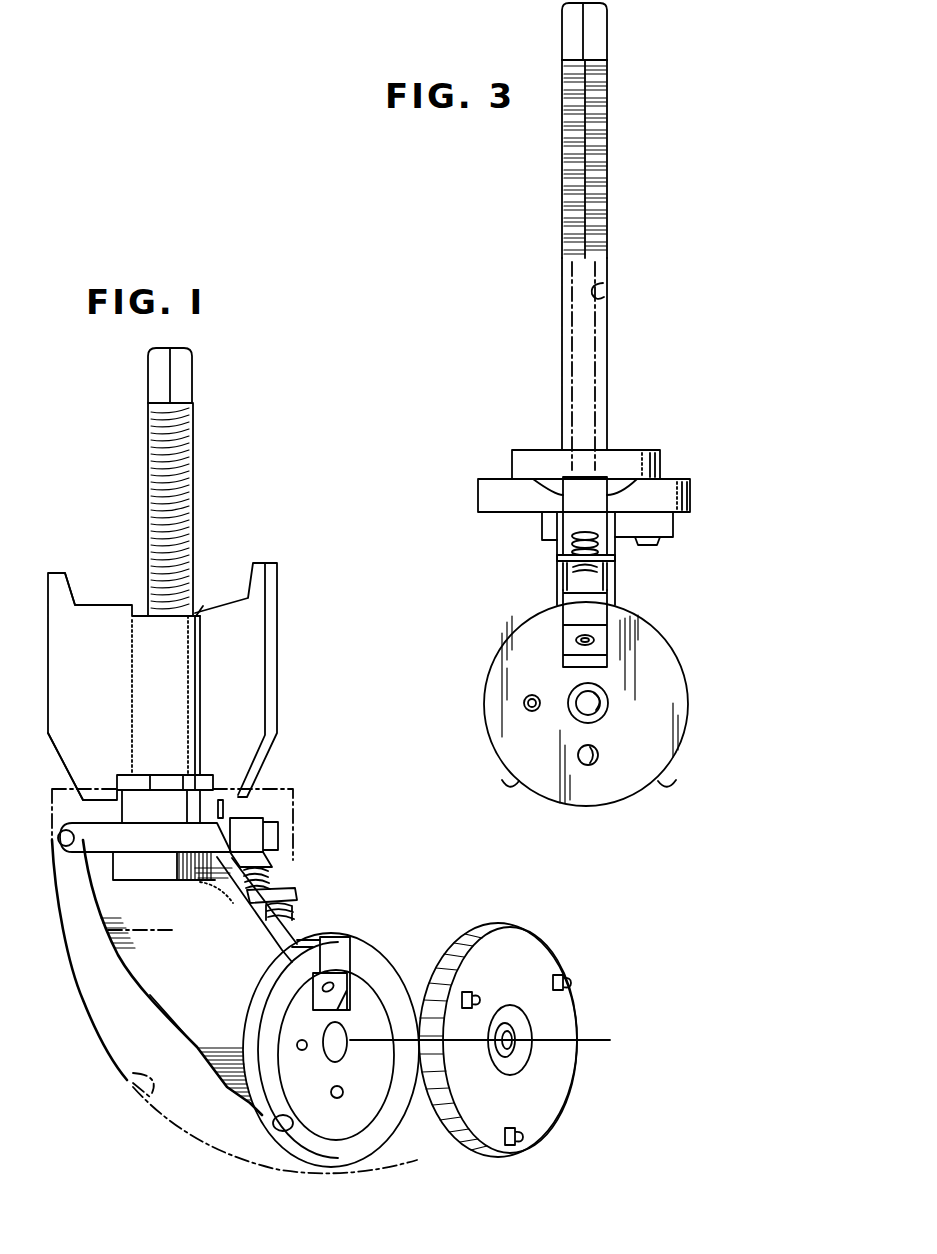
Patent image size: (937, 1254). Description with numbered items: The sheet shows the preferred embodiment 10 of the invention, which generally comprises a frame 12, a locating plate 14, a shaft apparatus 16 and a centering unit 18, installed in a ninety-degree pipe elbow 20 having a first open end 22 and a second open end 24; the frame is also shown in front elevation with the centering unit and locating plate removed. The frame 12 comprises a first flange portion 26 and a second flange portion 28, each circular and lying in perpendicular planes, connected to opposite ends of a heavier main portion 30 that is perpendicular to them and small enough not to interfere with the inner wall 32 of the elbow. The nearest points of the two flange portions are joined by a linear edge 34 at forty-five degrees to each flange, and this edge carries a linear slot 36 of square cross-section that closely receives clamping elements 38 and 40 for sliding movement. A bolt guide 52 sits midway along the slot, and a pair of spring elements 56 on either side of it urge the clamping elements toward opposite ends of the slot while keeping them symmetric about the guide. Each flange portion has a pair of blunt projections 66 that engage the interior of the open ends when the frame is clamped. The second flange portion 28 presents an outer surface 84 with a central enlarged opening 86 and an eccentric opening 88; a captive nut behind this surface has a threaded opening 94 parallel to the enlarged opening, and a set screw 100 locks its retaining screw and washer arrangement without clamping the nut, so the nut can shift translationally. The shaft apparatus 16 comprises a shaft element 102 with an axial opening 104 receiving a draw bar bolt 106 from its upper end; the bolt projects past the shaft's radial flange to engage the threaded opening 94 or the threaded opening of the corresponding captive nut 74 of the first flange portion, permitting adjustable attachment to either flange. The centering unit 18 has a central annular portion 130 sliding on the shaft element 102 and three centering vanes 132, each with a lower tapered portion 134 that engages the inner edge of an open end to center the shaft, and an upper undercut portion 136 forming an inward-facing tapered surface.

In FIG. 1, the embodiment 10 is at (322, 545).
In FIG. 1, the frame 12 is at (108, 958).
In FIG. 1, the locating plate 14 is at (531, 932).
In FIG. 1, the shaft apparatus 16 is at (146, 520).
In FIG. 3, the shaft apparatus 16 is at (612, 244).
In FIG. 1, the centering unit 18 is at (265, 666).
In FIG. 1, the pipe elbow 20 is at (300, 858).
In FIG. 1, the first open end 22 is at (260, 792).
In FIG. 1, the second open end 24 is at (417, 1160).
In FIG. 1, the first flange portion 26 is at (86, 850).
In FIG. 1, the second flange portion 28 is at (330, 1127).
In FIG. 1, the main portion 30 is at (162, 1012).
In FIG. 1, the inner wall 32 is at (142, 1095).
In FIG. 1, the edge 34 is at (207, 873).
In FIG. 1, the linear slot 36 is at (300, 896).
In FIG. 1, the clamping element 38 is at (245, 826).
In FIG. 1, the clamping element 40 is at (345, 946).
In FIG. 1, the bolt guide 52 is at (276, 886).
In FIG. 3, the bolt guide 52 is at (598, 560).
In FIG. 1, the spring elements 56 is at (275, 880).
In FIG. 3, the spring elements 56 is at (560, 562).
In FIG. 3, the blunt projections 66 is at (498, 779).
In FIG. 3, the captive nut 74 is at (672, 534).
In FIG. 3, the outer surface 84 is at (650, 660).
In FIG. 3, the central enlarged opening 86 is at (603, 698).
In FIG. 3, the eccentric opening 88 is at (599, 756).
In FIG. 3, the threaded opening 94 is at (598, 708).
In FIG. 3, the set screw 100 is at (522, 702).
In FIG. 3, the shaft element 102 is at (610, 352).
In FIG. 3, the axial opening 104 is at (604, 297).
In FIG. 3, the draw bar bolt 106 is at (600, 52).
In FIG. 1, the central annular portion 130 is at (197, 616).
In FIG. 1, the centering vanes 132 is at (58, 650).
In FIG. 1, the tapered portion 134 is at (52, 760).
In FIG. 1, the undercut portion 136 is at (75, 597).